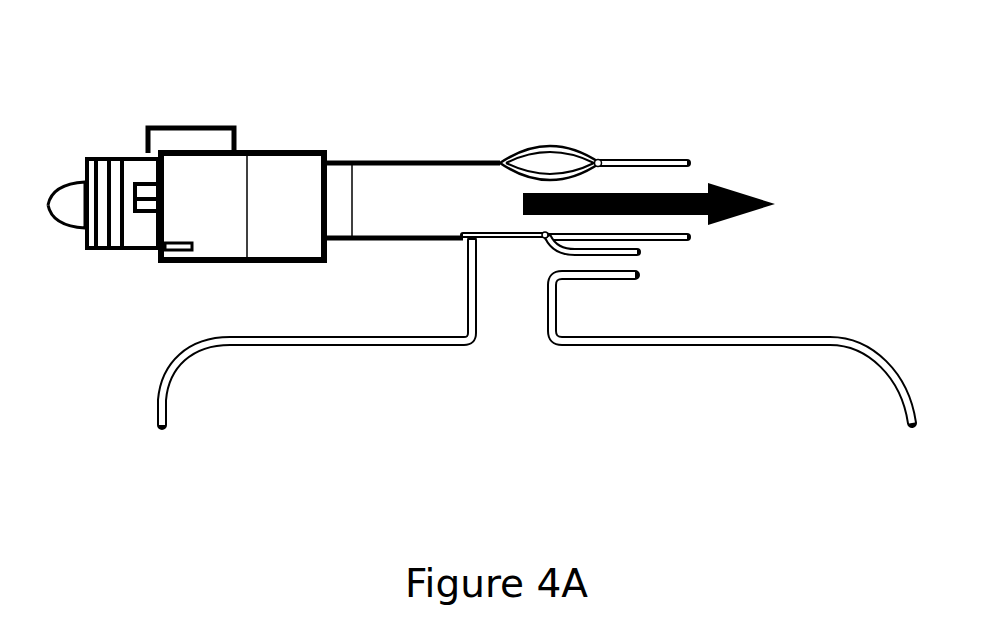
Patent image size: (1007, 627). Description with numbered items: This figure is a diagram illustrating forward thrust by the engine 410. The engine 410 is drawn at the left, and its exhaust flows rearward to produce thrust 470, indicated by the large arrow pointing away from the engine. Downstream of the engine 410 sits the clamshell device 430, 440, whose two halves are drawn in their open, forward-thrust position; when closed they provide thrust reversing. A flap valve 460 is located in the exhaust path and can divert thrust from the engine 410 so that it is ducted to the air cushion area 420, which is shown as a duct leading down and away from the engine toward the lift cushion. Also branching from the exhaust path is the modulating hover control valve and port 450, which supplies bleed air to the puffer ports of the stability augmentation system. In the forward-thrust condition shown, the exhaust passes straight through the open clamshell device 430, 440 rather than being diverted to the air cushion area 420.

The engine 410 is at (163, 122).
The air cushion area 420 is at (160, 371).
The clamshell device 430 is at (565, 142).
The clamshell device 440 is at (513, 183).
The modulating hover control valve and port 450 is at (642, 278).
The flap valve 460 is at (483, 222).
The thrust 470 is at (703, 182).